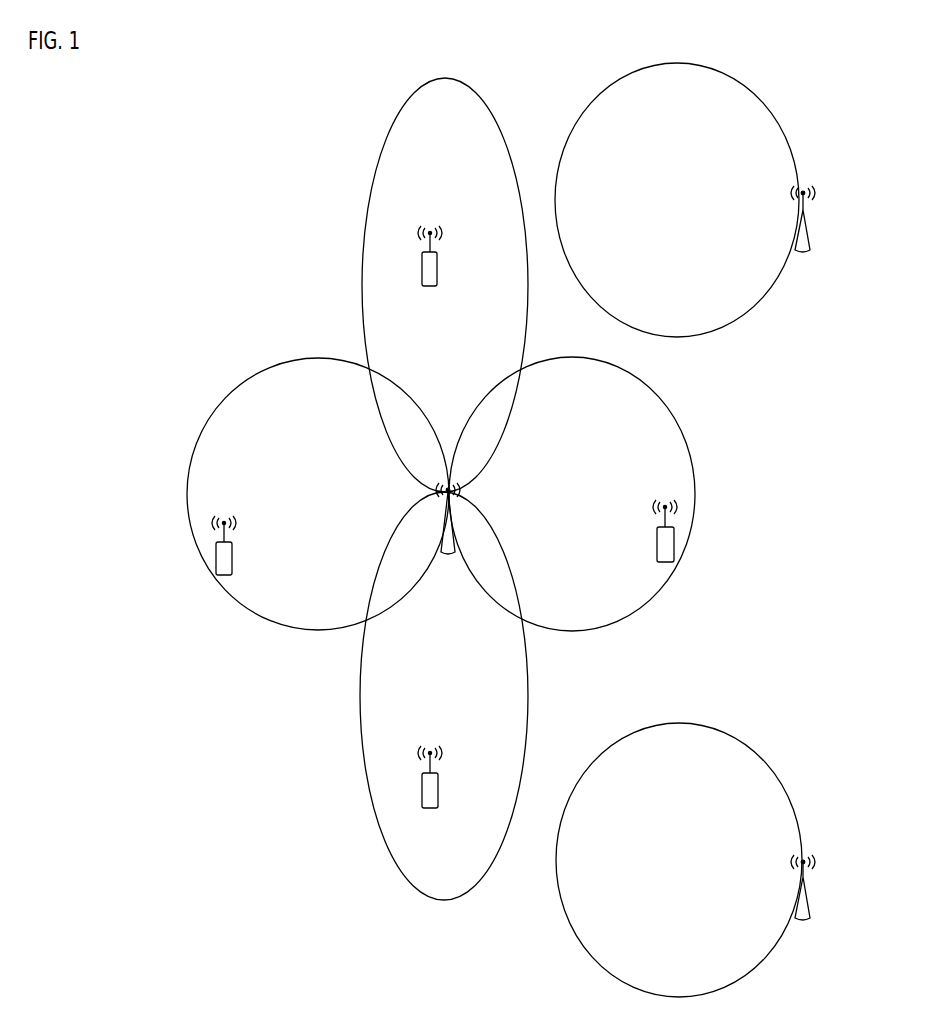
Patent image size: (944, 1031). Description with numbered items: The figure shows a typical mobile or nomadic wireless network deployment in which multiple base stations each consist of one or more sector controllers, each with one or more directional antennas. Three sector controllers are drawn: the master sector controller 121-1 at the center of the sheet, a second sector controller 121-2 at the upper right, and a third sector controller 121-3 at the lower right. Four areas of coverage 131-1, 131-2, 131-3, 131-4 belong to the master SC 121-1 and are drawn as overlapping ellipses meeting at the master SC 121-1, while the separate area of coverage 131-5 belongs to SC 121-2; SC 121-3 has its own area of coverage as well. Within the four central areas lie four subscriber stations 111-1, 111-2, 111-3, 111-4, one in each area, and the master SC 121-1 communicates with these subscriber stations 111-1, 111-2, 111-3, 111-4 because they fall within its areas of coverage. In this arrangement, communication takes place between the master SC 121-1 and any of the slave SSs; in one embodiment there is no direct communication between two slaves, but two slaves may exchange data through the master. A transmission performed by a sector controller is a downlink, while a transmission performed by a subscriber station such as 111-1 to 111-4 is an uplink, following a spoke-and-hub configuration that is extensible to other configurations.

The subscriber station 111-1 is at (222, 566).
The subscriber station 111-2 is at (425, 789).
The subscriber station 111-3 is at (674, 545).
The subscriber station 111-4 is at (427, 255).
The master sector controller 121-1 is at (447, 553).
The sector controller 121-2 is at (808, 250).
The sector controller 121-3 is at (807, 920).
The area of coverage 131-1 is at (200, 447).
The area of coverage 131-2 is at (395, 158).
The area of coverage 131-3 is at (678, 455).
The area of coverage 131-4 is at (500, 674).
The area of coverage 131-5 is at (643, 128).